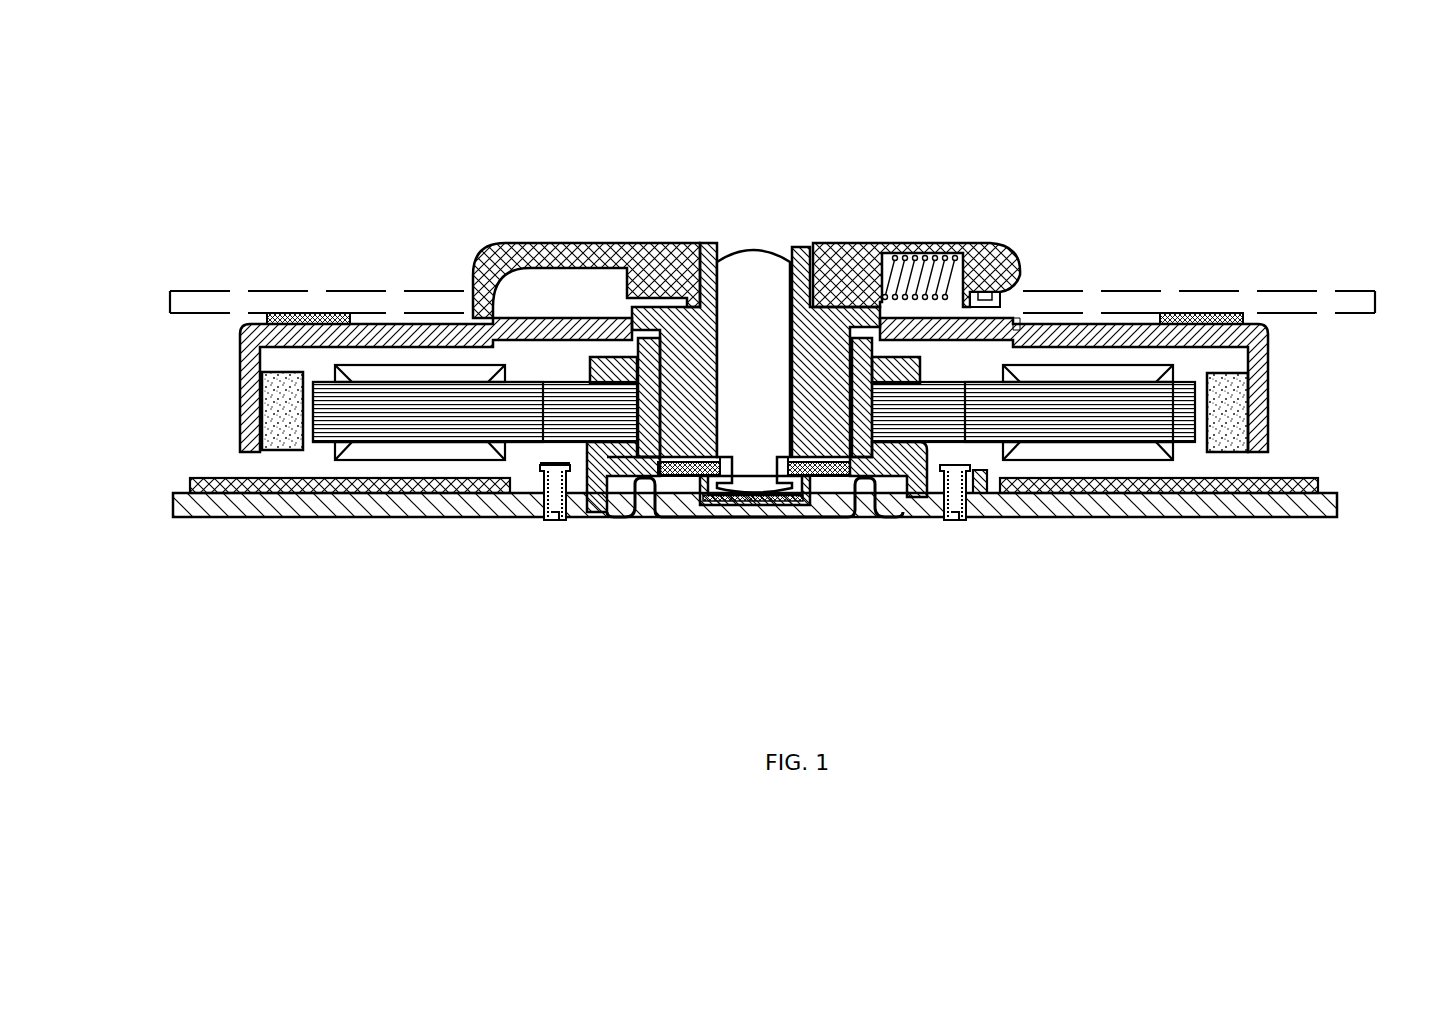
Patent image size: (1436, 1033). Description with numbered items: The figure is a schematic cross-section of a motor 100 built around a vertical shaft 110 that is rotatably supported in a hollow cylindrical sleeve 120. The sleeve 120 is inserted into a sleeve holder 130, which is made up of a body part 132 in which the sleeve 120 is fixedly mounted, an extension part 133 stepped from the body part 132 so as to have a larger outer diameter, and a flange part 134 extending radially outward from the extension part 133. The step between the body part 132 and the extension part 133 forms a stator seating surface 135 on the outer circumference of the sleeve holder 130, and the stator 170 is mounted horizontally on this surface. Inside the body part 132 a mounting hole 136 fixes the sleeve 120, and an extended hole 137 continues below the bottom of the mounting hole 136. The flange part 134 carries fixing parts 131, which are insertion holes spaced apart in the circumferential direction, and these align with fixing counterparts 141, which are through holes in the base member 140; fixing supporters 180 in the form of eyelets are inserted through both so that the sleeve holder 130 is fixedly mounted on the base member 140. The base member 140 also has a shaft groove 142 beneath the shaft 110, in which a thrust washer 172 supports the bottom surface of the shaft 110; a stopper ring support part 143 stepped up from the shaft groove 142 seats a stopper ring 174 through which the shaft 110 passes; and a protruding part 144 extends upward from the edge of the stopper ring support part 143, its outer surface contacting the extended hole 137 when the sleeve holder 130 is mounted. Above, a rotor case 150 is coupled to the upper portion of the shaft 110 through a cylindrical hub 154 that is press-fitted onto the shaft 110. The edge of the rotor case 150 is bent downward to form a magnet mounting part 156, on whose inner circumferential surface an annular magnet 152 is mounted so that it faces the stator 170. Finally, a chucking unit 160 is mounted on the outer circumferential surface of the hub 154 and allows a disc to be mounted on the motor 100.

The motor 100 is at (431, 73).
The shaft 110 is at (757, 262).
The sleeve 120 is at (687, 357).
The sleeve holder 130 is at (1073, 603).
The fixing parts 131 is at (962, 520).
The body part 132 is at (820, 475).
The extension part 133 is at (915, 480).
The flange part 134 is at (985, 490).
The stator seating surface 135 is at (868, 465).
The mounting hole 136 is at (790, 475).
The extended hole 137 is at (880, 480).
The base member 140 is at (1145, 505).
The fixing counterparts 141 is at (540, 518).
The shaft groove 142 is at (710, 512).
The stopper ring support part 143 is at (663, 463).
The protruding part 144 is at (633, 470).
The rotor case 150 is at (1020, 327).
The magnet 152 is at (1242, 415).
The hub 154 is at (803, 262).
The magnet mounting part 156 is at (1263, 368).
The chucking unit 160 is at (868, 255).
The stator 170 is at (407, 420).
The thrust washer 172 is at (728, 500).
The stopper ring 174 is at (700, 480).
The fixing supporters 180 is at (570, 518).